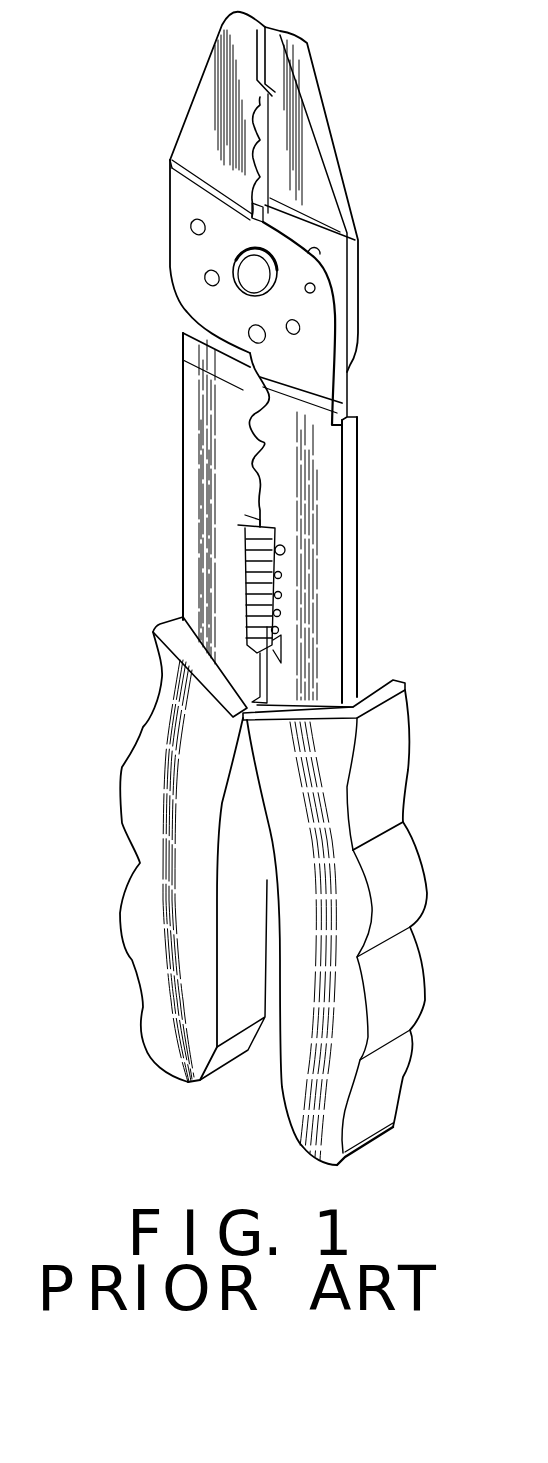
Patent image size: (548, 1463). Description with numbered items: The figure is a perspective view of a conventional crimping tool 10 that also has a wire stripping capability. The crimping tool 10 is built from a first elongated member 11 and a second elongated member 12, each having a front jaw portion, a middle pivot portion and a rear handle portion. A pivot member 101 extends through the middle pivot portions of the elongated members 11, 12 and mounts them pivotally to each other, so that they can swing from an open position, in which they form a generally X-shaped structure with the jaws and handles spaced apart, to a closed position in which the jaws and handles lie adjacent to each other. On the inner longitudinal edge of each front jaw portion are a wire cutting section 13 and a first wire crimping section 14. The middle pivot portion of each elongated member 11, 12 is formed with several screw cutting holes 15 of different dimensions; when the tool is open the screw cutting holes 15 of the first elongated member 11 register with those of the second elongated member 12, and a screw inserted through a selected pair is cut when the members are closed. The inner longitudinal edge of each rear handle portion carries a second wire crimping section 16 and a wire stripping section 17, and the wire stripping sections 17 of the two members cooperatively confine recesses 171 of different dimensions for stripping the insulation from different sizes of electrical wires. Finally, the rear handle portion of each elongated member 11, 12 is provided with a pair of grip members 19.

The crimping tool 10 is at (364, 473).
The first elongated member 11 is at (350, 413).
The second elongated member 12 is at (359, 335).
The wire cutting section 13 is at (260, 62).
The first wire crimping section 14 is at (260, 173).
The screw cutting holes 15 is at (258, 338).
The second wire crimping section 16 is at (260, 453).
The wire stripping section 17 is at (278, 598).
The recesses 171 is at (275, 555).
The grip members 19 is at (388, 743).
The pivot member 101 is at (255, 277).